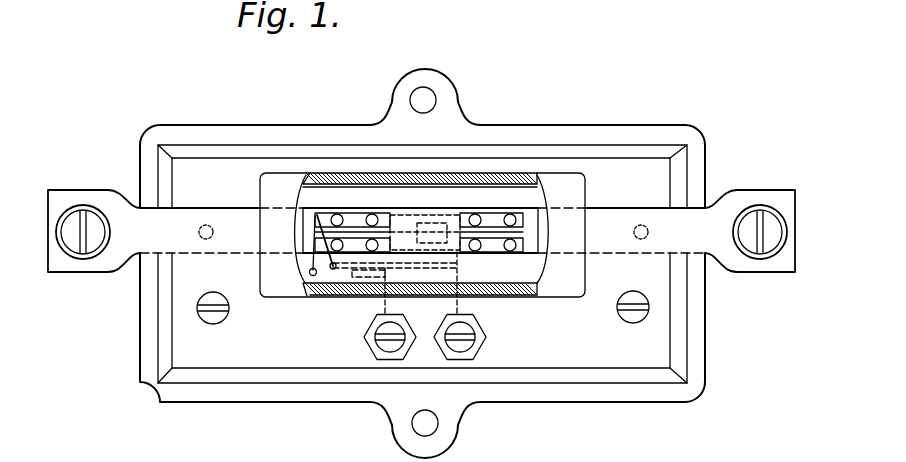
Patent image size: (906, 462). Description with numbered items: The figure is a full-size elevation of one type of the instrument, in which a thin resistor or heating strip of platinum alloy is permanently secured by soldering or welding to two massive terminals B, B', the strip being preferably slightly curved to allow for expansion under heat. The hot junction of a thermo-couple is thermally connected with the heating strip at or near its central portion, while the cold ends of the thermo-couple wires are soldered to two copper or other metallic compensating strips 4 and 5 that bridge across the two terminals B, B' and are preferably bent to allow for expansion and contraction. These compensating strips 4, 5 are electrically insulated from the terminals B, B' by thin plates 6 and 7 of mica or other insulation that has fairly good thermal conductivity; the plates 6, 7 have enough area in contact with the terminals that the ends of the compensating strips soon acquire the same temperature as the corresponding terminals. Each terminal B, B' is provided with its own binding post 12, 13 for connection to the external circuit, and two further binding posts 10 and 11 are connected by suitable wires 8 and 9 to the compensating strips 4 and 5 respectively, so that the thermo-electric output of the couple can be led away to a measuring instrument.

The terminal B is at (422, 263).
The terminal B' is at (421, 224).
The compensating strip 4 is at (452, 215).
The compensating strip 5 is at (455, 252).
The insulating plate 6 is at (535, 205).
The insulating plate 7 is at (307, 242).
The wire 8 is at (312, 277).
The wire 9 is at (352, 273).
The binding post 10 is at (372, 334).
The binding post 11 is at (484, 340).
The binding post 12 is at (73, 246).
The binding post 13 is at (770, 246).